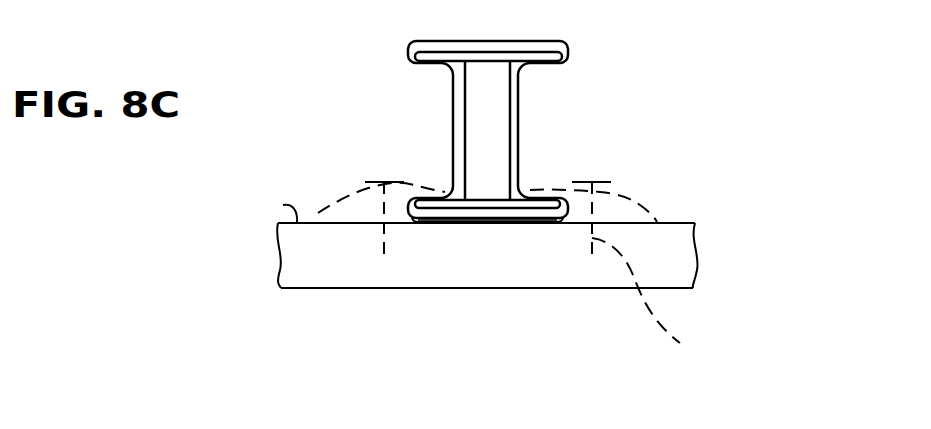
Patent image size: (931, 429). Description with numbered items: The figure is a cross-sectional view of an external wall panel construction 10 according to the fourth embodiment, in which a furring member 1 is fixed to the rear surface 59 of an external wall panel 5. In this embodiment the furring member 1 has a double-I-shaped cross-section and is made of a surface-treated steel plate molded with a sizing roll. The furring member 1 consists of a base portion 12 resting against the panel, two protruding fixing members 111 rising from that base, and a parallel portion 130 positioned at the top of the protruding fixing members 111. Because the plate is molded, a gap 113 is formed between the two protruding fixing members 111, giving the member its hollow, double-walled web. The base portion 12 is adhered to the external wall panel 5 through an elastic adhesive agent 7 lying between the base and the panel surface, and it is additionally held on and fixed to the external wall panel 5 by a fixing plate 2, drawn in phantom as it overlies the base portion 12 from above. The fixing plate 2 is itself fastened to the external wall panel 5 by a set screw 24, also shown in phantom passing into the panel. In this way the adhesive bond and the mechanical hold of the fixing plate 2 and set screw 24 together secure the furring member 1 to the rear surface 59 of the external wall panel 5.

The external wall panel construction 10 is at (745, 86).
The furring member 1 is at (523, 125).
The parallel portion 130 is at (523, 42).
The protruding fixing members 111 is at (522, 88).
The gap 113 is at (488, 152).
The external wall panel 5 is at (670, 266).
The rear surface 59 is at (283, 205).
The elastic adhesive agent 7 is at (482, 222).
The base portion 12 is at (443, 222).
The fixing plate 2 is at (640, 195).
The set screw 24 is at (668, 302).